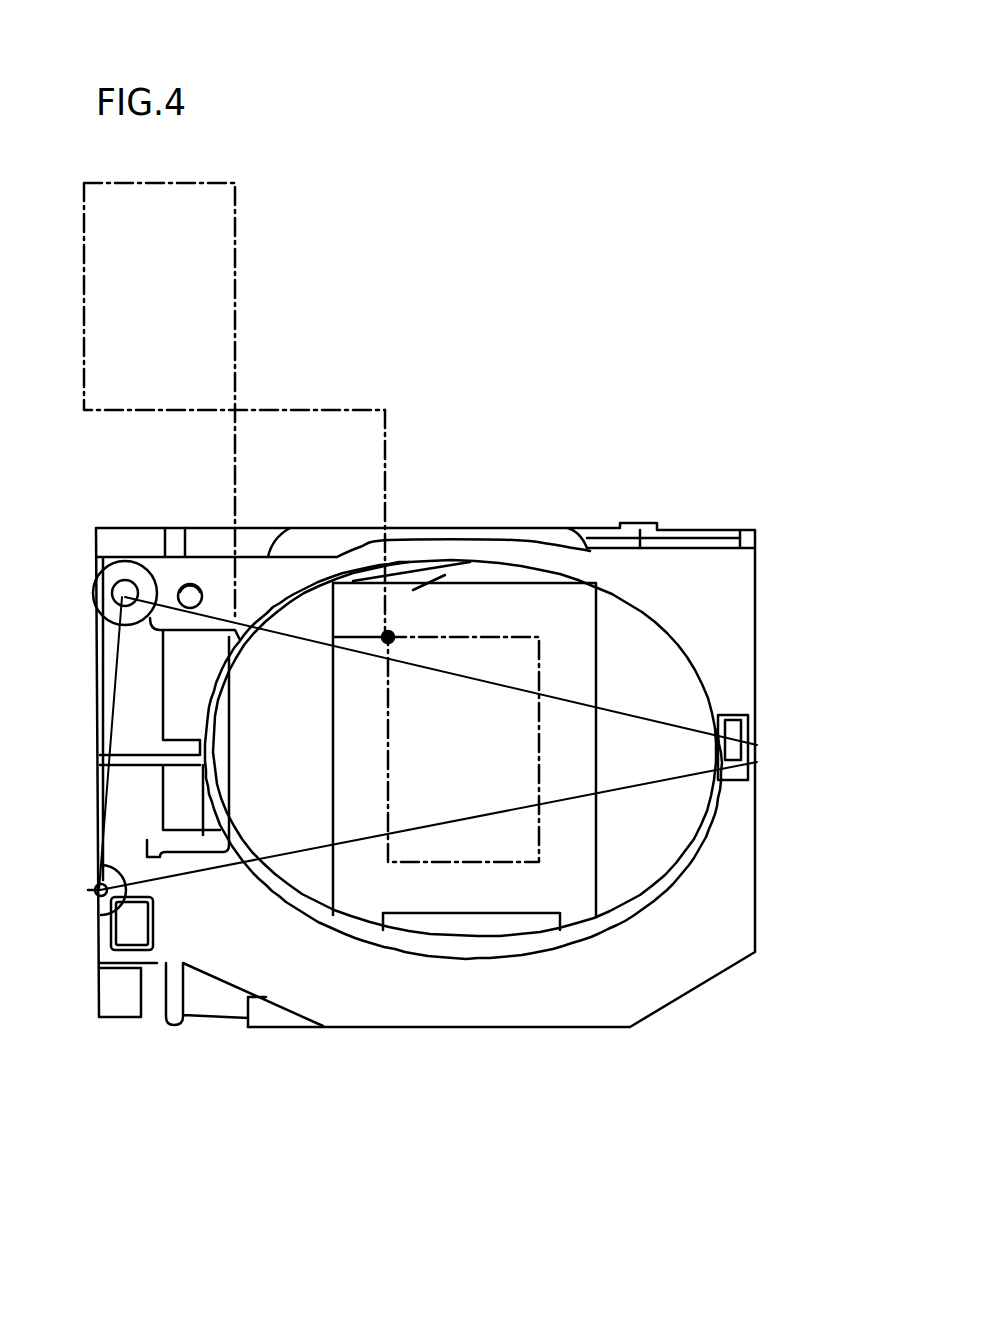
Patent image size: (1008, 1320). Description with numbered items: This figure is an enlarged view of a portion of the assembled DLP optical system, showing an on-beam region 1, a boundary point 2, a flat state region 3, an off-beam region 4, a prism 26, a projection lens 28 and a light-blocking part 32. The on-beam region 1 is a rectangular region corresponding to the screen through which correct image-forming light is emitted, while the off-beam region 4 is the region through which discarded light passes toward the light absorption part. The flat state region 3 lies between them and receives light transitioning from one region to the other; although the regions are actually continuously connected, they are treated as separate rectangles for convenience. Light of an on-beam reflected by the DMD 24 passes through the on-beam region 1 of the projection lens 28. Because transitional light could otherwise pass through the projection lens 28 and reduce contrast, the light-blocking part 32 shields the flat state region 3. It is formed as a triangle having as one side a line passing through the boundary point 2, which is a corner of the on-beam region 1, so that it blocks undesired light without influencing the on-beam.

The on-beam region 1 is at (506, 667).
The boundary point 2 is at (240, 681).
The flat state region 3 is at (372, 453).
The off-beam region 4 is at (235, 283).
The DMD 24 is at (683, 648).
The prism 26 is at (576, 628).
The projection lens 28 is at (460, 943).
The light-blocking part 32 is at (345, 690).